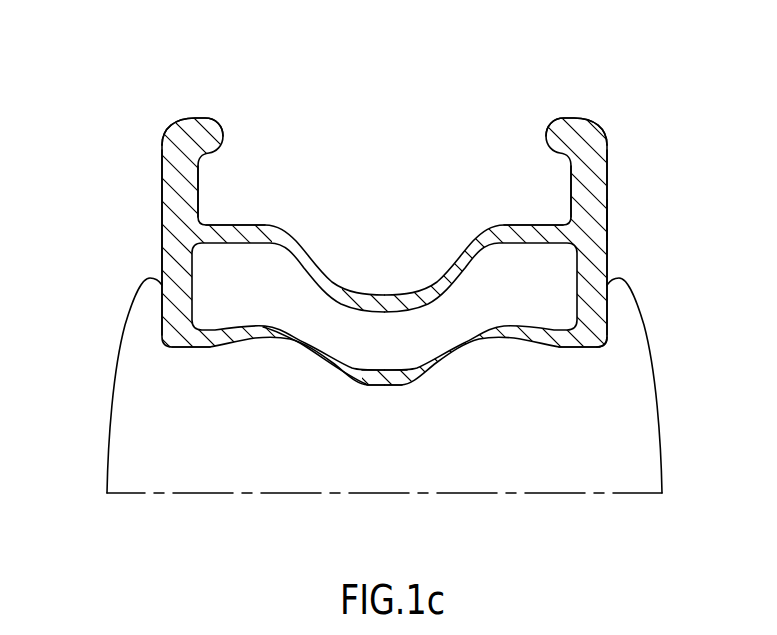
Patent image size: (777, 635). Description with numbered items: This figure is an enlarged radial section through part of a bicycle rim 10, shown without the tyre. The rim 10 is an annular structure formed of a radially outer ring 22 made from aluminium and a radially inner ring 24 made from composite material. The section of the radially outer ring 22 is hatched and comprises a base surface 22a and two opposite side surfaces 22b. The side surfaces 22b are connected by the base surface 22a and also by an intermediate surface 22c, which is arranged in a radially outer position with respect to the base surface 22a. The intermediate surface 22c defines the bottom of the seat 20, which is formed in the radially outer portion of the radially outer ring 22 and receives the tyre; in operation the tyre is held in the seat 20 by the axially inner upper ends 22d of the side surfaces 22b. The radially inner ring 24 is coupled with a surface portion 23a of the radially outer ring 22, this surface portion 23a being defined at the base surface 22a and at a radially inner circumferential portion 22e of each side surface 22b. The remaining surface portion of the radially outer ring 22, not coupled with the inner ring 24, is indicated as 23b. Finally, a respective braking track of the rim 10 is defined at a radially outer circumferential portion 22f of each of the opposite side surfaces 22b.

The rim 10 is at (388, 285).
The seat 20 is at (388, 285).
The radially outer ring 22 is at (388, 285).
The base surface 22a is at (407, 385).
The side surfaces 22b is at (153, 180).
The intermediate surface 22c is at (518, 225).
The axially inner upper ends 22d is at (223, 130).
The radially inner circumferential portion 22e is at (162, 312).
The radially outer circumferential portion 22f is at (162, 223).
The surface portion 23a is at (625, 365).
The remaining surface portion 23b is at (648, 221).
The radially inner ring 24 is at (92, 400).